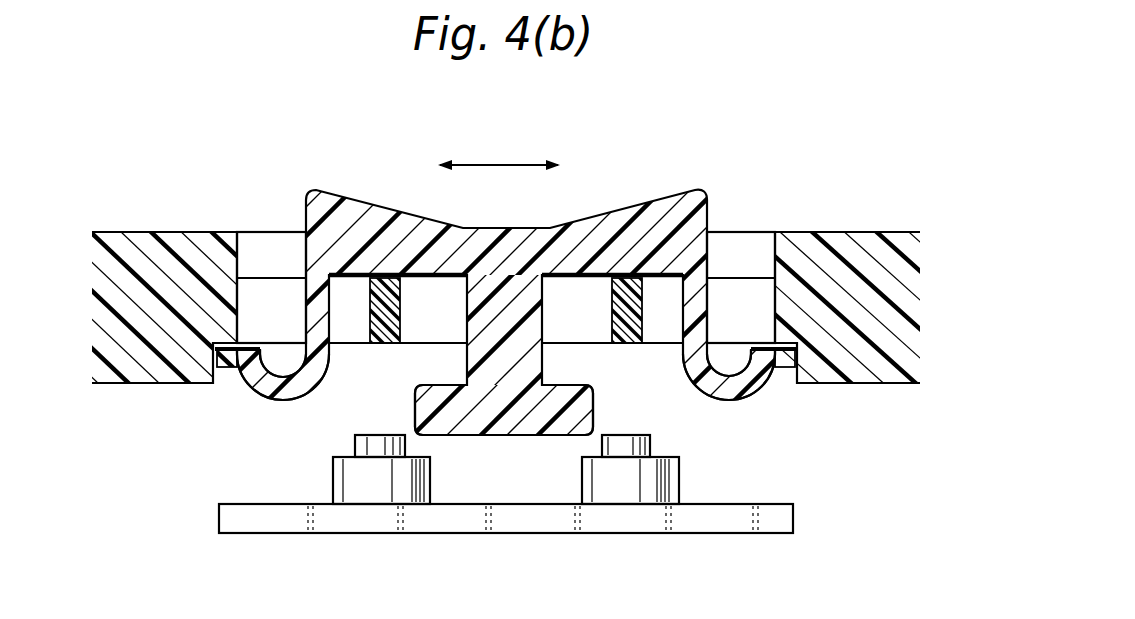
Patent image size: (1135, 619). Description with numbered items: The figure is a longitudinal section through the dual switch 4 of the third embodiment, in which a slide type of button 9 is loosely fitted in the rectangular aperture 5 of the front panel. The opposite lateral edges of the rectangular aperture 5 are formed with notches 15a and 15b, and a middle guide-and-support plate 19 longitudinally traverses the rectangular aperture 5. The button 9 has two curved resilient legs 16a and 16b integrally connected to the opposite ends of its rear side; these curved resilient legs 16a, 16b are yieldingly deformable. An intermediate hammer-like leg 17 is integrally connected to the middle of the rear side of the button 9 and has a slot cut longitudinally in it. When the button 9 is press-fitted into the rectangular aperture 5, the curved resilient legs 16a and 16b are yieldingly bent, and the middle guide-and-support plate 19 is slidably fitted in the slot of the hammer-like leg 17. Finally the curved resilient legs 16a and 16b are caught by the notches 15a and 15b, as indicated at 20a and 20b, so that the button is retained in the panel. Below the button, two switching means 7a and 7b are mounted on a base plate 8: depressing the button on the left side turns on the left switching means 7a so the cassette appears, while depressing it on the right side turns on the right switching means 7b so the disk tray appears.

The dual switch 4 is at (714, 141).
The rectangular aperture 5 is at (272, 258).
The left switching means 7a is at (375, 447).
The right switching means 7b is at (628, 447).
The base plate 8 is at (558, 520).
The slide type button 9 is at (497, 243).
The notch 15a is at (222, 337).
The notch 15b is at (788, 332).
The curved resilient leg 16a is at (292, 398).
The curved resilient leg 16b is at (730, 398).
The hammer-like leg 17 is at (502, 426).
The middle guide-and-support plate 19 is at (401, 325).
The catch point 20a is at (232, 368).
The catch point 20b is at (790, 368).